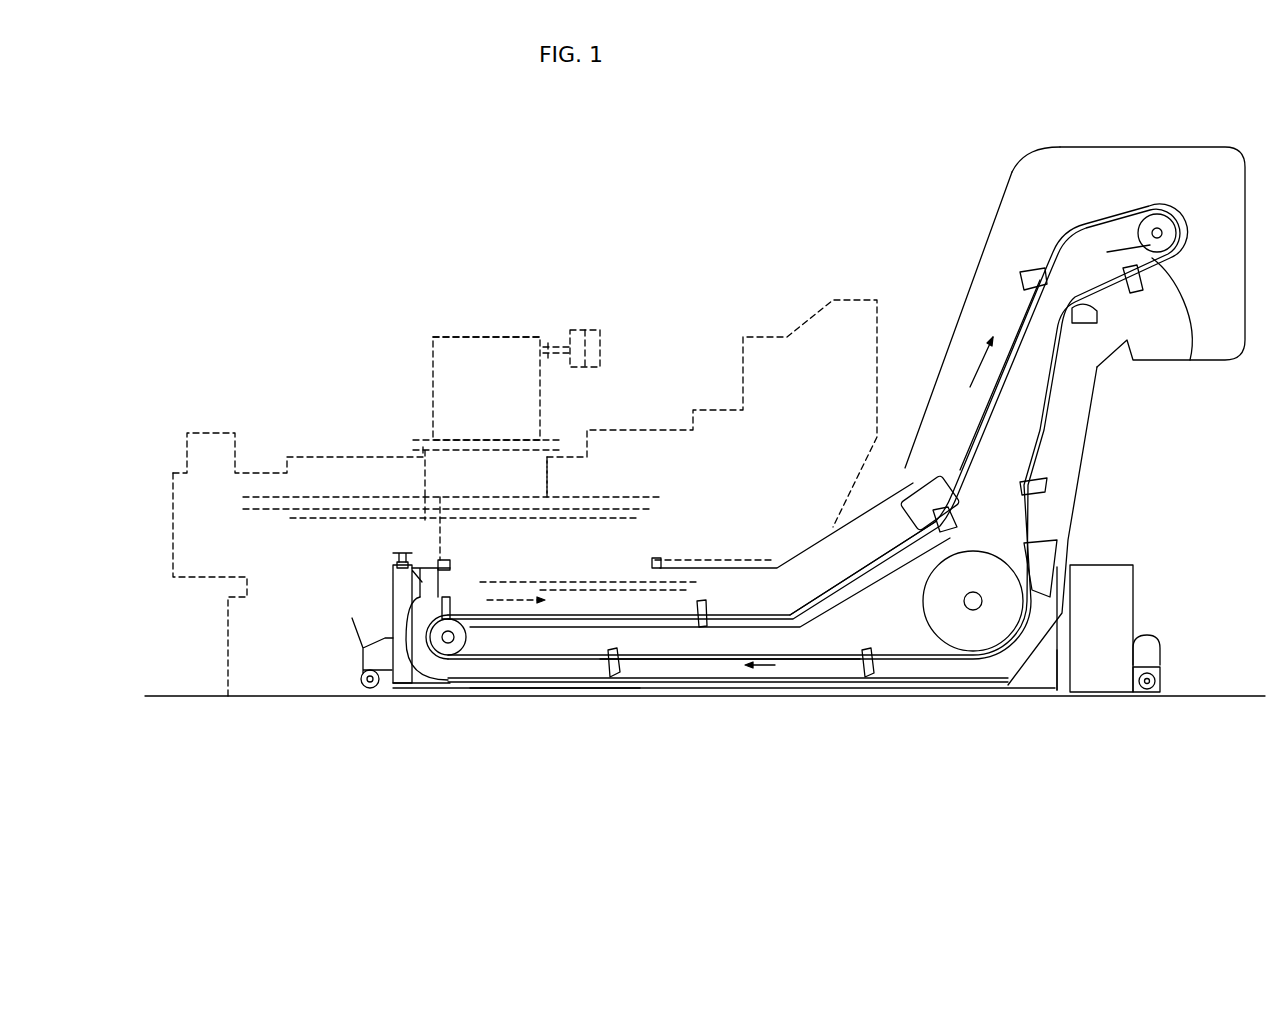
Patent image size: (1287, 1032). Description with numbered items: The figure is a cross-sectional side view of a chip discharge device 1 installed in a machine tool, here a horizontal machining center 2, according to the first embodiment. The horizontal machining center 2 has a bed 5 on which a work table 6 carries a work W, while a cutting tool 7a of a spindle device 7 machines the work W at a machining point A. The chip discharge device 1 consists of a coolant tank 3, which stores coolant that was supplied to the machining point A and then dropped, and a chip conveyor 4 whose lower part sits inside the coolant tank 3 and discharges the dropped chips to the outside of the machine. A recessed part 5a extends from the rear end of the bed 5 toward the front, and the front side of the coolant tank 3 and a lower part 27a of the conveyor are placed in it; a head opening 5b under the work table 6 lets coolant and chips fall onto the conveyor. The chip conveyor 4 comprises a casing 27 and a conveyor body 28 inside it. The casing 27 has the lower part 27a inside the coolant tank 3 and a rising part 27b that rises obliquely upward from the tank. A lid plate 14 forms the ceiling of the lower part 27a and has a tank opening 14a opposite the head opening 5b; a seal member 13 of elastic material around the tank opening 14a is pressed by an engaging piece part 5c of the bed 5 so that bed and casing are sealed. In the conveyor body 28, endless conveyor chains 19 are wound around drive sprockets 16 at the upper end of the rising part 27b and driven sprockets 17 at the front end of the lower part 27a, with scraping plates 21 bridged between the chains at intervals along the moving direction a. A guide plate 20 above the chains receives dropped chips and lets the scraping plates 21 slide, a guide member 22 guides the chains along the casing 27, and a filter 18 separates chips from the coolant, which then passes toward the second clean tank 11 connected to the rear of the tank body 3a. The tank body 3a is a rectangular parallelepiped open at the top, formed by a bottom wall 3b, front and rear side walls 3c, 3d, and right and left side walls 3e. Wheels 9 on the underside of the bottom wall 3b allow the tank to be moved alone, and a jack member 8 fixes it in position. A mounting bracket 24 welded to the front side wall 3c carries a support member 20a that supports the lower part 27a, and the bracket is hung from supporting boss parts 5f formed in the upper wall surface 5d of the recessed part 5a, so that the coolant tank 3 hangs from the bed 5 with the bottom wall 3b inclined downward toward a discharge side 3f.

The chip discharge device 1 is at (1203, 112).
The horizontal machining center 2 is at (833, 300).
The coolant tank 3 is at (1150, 625).
The tank body 3a is at (382, 611).
The bottom wall 3b is at (558, 690).
The front side wall 3c is at (352, 618).
The rear side wall 3d is at (1137, 640).
The right and left side walls 3e is at (400, 686).
The discharge side 3f is at (1068, 688).
The chip conveyor 4 is at (1053, 72).
The bed 5 is at (312, 445).
The recessed part 5a is at (393, 573).
The head opening 5b is at (618, 497).
The engaging piece part 5c is at (662, 557).
The upper wall surface 5d is at (433, 562).
The supporting boss parts 5f is at (393, 567).
The work table 6 is at (430, 437).
The spindle device 7 is at (600, 317).
The cutting tool 7a is at (563, 312).
The jack member 8 is at (1122, 697).
The wheels 9 is at (366, 690).
The second clean tank 11 is at (1140, 590).
The seal member 13 is at (450, 562).
The lid plate 14 is at (738, 560).
The tank opening 14a is at (650, 565).
The drive sprockets 16 is at (1190, 362).
The driven sprockets 17 is at (482, 658).
The filter 18 is at (930, 625).
The conveyor chains 19 is at (1050, 430).
The guide plate 20 is at (833, 607).
The support member 20a is at (448, 582).
The scraping plates 21 is at (1015, 278).
The guide member 22 is at (900, 475).
The mounting bracket 24 is at (393, 557).
The casing 27 is at (1033, 145).
The lower part 27a is at (802, 685).
The rising part 27b is at (963, 323).
The conveyor body 28 is at (1045, 232).
The machining point A is at (548, 332).
The work W is at (450, 335).
The moving direction a is at (538, 587).